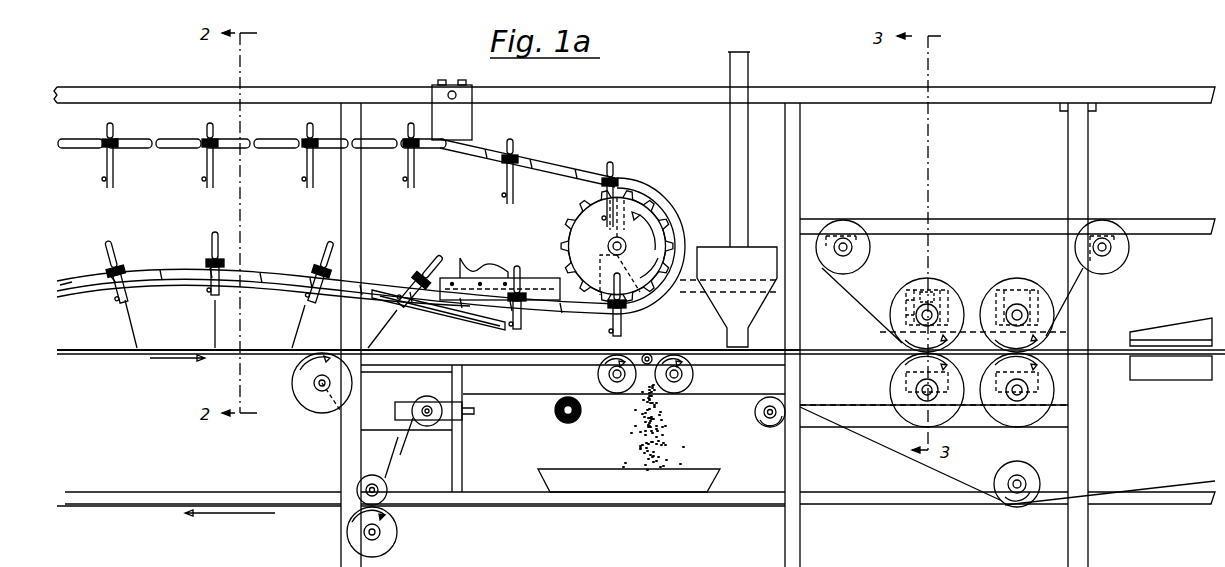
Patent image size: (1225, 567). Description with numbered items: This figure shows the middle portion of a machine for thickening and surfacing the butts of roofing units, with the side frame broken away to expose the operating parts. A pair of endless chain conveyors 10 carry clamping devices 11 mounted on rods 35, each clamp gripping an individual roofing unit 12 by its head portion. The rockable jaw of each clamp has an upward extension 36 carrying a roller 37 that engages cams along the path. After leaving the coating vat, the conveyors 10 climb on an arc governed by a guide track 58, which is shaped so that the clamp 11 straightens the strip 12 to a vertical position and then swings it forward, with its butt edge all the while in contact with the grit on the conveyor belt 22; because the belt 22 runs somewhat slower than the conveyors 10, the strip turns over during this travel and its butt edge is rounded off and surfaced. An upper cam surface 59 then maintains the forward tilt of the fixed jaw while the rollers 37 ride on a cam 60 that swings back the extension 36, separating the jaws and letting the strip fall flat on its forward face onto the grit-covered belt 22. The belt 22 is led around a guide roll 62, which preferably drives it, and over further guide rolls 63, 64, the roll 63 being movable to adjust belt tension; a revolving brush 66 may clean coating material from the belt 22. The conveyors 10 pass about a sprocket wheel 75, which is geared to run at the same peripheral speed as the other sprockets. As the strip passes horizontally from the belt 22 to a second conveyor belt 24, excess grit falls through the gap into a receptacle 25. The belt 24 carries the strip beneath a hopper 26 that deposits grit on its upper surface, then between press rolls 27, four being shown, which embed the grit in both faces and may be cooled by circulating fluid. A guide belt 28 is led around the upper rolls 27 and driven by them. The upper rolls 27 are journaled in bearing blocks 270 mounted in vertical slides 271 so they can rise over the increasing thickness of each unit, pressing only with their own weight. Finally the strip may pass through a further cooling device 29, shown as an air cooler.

The endless conveyors 10 is at (273, 146).
The clamping devices 11 is at (113, 188).
The roofing units 12 is at (213, 333).
The conveyor belt 22 is at (105, 356).
The conveyor belt 24 is at (732, 397).
The receptacle 25 is at (578, 474).
The hopper 26 is at (728, 199).
The press rolls 27 is at (918, 280).
The guide belt 28 is at (970, 218).
The cooling device 29 is at (1180, 326).
The rod 35 is at (120, 262).
The extensions 36 is at (318, 258).
The rollers 37 is at (214, 238).
The guide track 58 is at (195, 285).
The upper cam surface 59 is at (468, 318).
The cam 60 is at (481, 270).
The guide roll 62 is at (598, 375).
The guide roll 63 is at (428, 428).
The guide roll 64 is at (376, 476).
The revolving brush 66 is at (555, 410).
The sprocket wheel 75 is at (583, 227).
The bearing blocks 270 is at (934, 292).
The vertical slides 271 is at (906, 306).